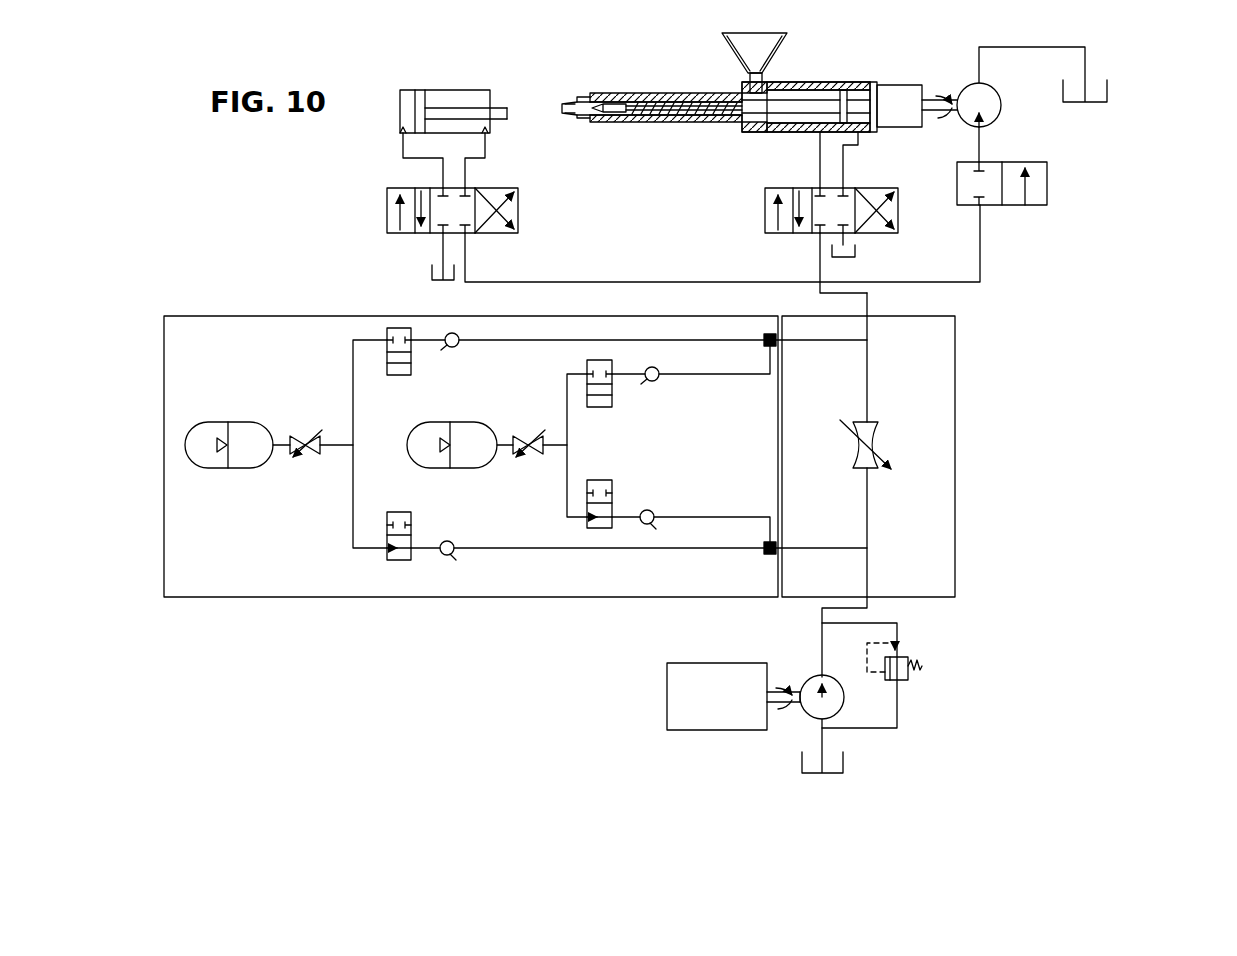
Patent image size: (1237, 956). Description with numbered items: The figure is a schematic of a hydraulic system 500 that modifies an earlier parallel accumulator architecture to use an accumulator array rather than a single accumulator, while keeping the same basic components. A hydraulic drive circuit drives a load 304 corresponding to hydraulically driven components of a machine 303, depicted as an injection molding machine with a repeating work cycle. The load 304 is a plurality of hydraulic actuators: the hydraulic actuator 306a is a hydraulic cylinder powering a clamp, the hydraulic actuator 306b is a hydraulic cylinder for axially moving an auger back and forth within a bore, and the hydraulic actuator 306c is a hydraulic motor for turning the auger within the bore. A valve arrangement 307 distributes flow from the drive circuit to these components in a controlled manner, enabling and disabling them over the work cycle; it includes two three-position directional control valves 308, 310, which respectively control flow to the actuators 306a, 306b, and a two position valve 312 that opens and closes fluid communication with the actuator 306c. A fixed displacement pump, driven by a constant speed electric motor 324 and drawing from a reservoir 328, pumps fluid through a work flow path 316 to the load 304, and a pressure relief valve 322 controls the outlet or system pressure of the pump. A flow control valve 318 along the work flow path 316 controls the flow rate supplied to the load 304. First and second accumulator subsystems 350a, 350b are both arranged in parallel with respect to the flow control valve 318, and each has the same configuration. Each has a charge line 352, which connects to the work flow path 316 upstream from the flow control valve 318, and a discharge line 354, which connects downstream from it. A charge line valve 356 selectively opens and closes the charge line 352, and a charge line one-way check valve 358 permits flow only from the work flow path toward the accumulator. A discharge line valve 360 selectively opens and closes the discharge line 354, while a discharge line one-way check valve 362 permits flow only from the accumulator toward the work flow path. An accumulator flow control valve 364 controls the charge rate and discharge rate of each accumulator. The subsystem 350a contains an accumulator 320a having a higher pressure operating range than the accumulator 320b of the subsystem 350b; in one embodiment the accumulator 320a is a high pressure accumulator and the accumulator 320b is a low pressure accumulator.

The hydraulic system 500 is at (1186, 86).
The machine 303 is at (801, 67).
The hydraulic actuator 306a is at (457, 90).
The hydraulic actuator 306b is at (842, 82).
The hydraulic actuator 306c is at (993, 88).
The valve arrangement 307 is at (1053, 222).
The three-position directional control valve 308 is at (518, 210).
The three-position directional control valve 310 is at (898, 210).
The two position valve 312 is at (1047, 183).
The load 304 is at (789, 292).
The work flow path 316 is at (870, 506).
The flow control valve 318 is at (880, 427).
The accumulator 320a is at (215, 422).
The accumulator 320b is at (468, 422).
The pressure relief valve 322 is at (908, 673).
The electric motor 324 is at (682, 732).
The reservoir 328 is at (843, 762).
The first accumulator subsystem 350a is at (336, 540).
The second accumulator subsystem 350b is at (550, 469).
The charge line 352 is at (722, 515).
The discharge line 354 is at (548, 338).
The charge line valve 356 is at (398, 512).
The charge line one-way check valve 358 is at (451, 541).
The discharge line valve 360 is at (392, 377).
The discharge line one-way check valve 362 is at (446, 348).
The accumulator flow control valve 364 is at (302, 437).